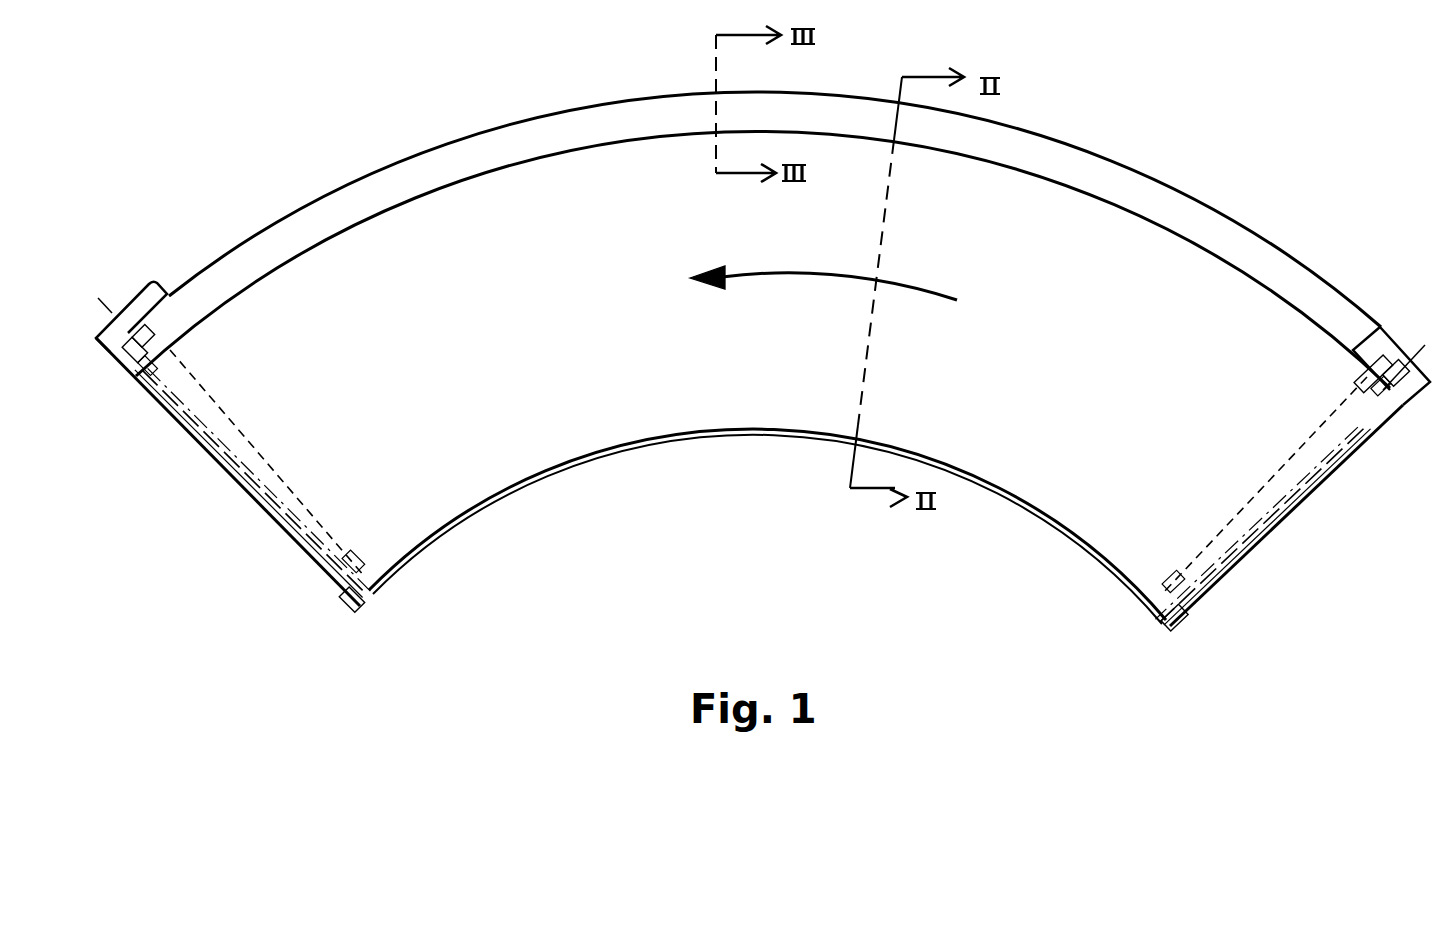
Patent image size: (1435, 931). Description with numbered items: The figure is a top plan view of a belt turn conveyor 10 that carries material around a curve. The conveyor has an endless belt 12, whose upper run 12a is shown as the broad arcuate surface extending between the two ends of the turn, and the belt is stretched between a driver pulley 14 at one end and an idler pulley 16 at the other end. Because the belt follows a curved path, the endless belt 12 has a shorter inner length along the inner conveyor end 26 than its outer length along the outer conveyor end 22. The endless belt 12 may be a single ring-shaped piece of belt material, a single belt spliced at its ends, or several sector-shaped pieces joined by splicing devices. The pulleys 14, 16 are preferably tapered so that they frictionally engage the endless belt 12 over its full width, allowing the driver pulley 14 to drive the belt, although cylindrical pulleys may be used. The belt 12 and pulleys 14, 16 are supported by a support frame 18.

The belt turn conveyor 10 is at (763, 338).
The endless belt 12 is at (763, 215).
The upper surface of track segment 12a is at (1150, 382).
The driver pulley 14 is at (228, 456).
The idler pulley 16 is at (1287, 500).
The support frame 18 is at (483, 134).
The outer conveyor end 22 is at (1190, 198).
The inner conveyor end 26 is at (766, 440).